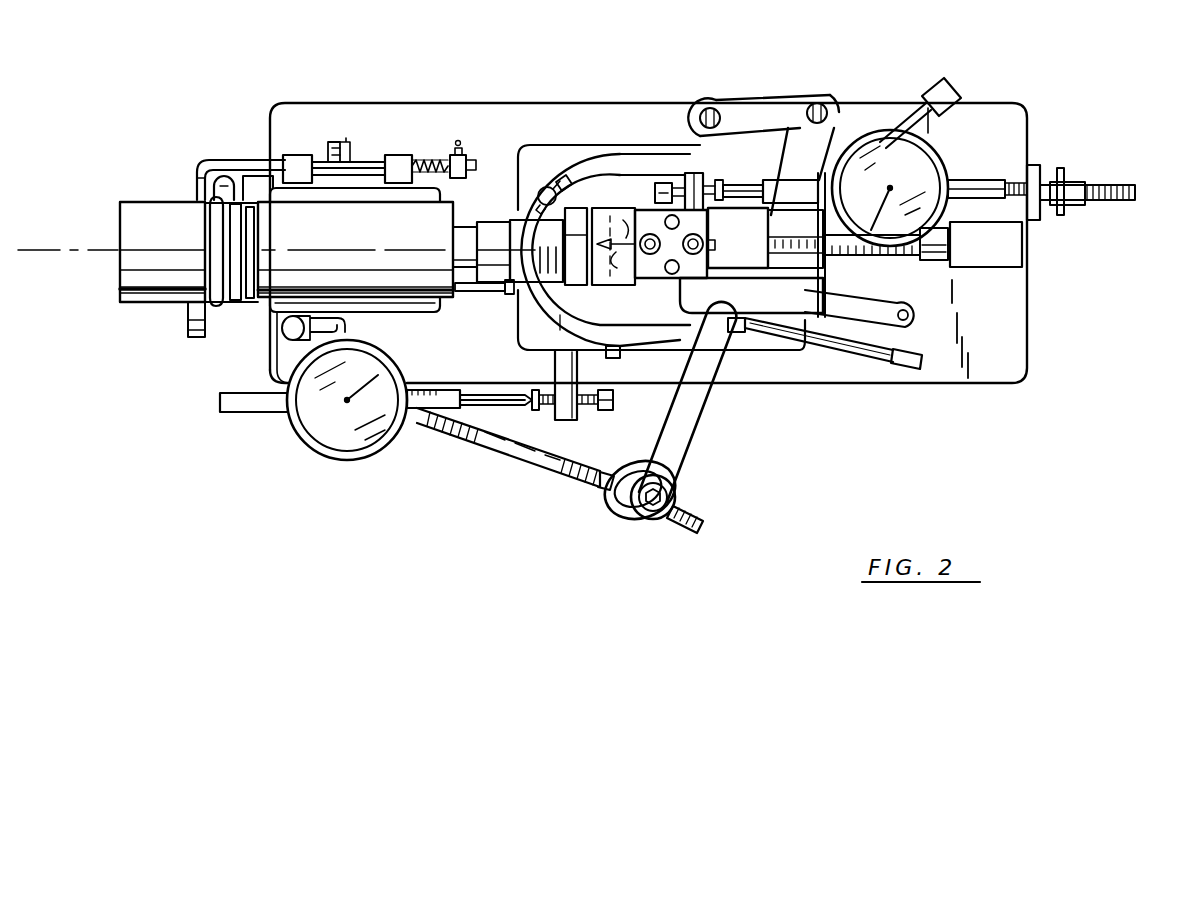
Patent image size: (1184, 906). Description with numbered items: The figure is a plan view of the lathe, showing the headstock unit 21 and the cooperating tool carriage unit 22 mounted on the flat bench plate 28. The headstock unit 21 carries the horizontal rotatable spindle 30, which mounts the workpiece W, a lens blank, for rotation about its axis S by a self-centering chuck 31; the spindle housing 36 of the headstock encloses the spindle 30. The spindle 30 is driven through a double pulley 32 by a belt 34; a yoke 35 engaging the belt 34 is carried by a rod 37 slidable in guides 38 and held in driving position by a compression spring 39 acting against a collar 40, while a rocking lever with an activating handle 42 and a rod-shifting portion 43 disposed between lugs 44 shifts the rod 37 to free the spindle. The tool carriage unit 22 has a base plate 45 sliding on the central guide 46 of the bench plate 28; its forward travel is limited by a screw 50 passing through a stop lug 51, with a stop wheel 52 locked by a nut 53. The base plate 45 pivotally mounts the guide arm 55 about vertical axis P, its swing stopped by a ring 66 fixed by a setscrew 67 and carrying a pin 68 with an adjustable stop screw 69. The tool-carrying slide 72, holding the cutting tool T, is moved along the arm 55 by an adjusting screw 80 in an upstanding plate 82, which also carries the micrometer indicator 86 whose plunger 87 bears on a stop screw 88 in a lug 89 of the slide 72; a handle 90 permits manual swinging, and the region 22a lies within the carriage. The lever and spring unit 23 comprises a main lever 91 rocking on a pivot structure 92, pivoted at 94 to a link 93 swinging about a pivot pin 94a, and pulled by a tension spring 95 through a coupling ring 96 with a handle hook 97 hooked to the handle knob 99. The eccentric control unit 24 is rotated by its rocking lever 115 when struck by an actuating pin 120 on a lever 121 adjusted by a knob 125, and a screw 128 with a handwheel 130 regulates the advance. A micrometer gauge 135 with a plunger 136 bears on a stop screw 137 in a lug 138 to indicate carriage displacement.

The headstock unit 21 is at (374, 314).
The tool carriage unit 22 is at (607, 170).
The ring block 22a is at (641, 310).
The lever linkage and spring unit 23 is at (708, 476).
The eccentric control unit 24 is at (777, 352).
The bench plate 28 is at (953, 331).
The spindle 30 is at (492, 237).
The self-centering chuck 31 is at (522, 289).
The double pulley 32 is at (222, 296).
The belt 34 is at (212, 192).
The yoke 35 is at (216, 160).
The housing 36 is at (343, 234).
The rod 37 is at (262, 160).
The guides 38 is at (405, 157).
The compression spring 39 is at (440, 155).
The collar 40 is at (468, 158).
The activating handle 42 is at (290, 334).
The rod-shifting portion 43 is at (325, 152).
The lugs 44 is at (358, 142).
The base plate 45 is at (703, 169).
The central guide portion 46 is at (976, 252).
The screw 50 is at (1113, 195).
The stop lug 51 is at (1035, 165).
The stop wheel 52 is at (1060, 215).
The locking nut 53 is at (1076, 184).
The guide arm 55 is at (707, 304).
The ring 66 is at (577, 316).
The setscrew 67 is at (620, 357).
The pin 68 is at (545, 192).
The stop screw 69 is at (542, 187).
The tool-carrying slide 72 is at (726, 227).
The adjusting screw 80 is at (860, 255).
The upstanding plate 82 is at (823, 292).
The micrometer indicator 86 is at (935, 155).
The actuating plunger 87 is at (745, 184).
The stop screw 88 is at (655, 192).
The lug 89 is at (690, 172).
The handle 90 is at (905, 125).
The main lever 91 is at (690, 427).
The pivot structure 92 is at (783, 195).
The link 93 is at (770, 104).
The pivot 94 is at (818, 101).
The pivot pin 94a is at (710, 106).
The tension spring 95 is at (532, 466).
The coupling ring 96 is at (612, 500).
The handle hook 97 is at (705, 518).
The handle knob 99 is at (662, 518).
The rocking lever 115 is at (878, 356).
The actuating pin 120 is at (878, 315).
The lever 121 is at (848, 300).
The knob 125 is at (735, 332).
The screw 128 is at (472, 288).
The handwheel 130 is at (192, 338).
The micrometer gauge 135 is at (350, 458).
The plunger 136 is at (497, 396).
The stop screw 137 is at (610, 402).
The lug 138 is at (568, 420).
The spindle axis S is at (400, 247).
The cutting tool T is at (613, 244).
The workpiece W is at (576, 225).